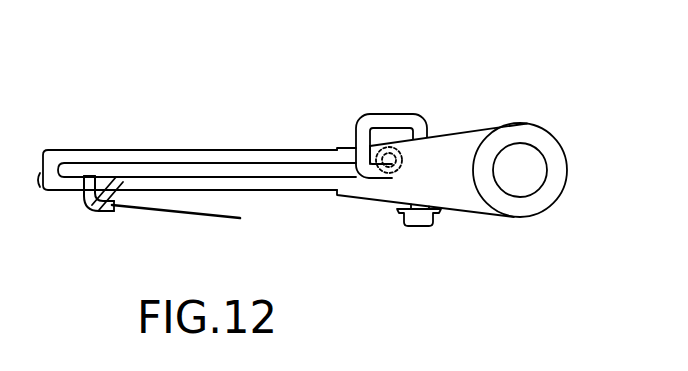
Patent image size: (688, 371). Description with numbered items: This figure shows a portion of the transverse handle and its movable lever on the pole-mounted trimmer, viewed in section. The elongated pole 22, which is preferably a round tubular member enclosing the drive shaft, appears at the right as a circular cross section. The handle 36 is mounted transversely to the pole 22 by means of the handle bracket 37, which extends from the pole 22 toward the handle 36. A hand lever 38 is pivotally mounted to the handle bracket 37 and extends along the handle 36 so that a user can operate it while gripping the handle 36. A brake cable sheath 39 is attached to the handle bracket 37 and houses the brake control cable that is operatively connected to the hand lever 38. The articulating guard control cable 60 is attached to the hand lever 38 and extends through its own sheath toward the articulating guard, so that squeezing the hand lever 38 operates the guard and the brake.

The pole 22 is at (524, 148).
The handle 36 is at (152, 152).
The handle bracket 37 is at (457, 145).
The hand lever 38 is at (400, 92).
The brake cable sheath 39 is at (389, 176).
The articulating guard control cable 60 is at (200, 218).